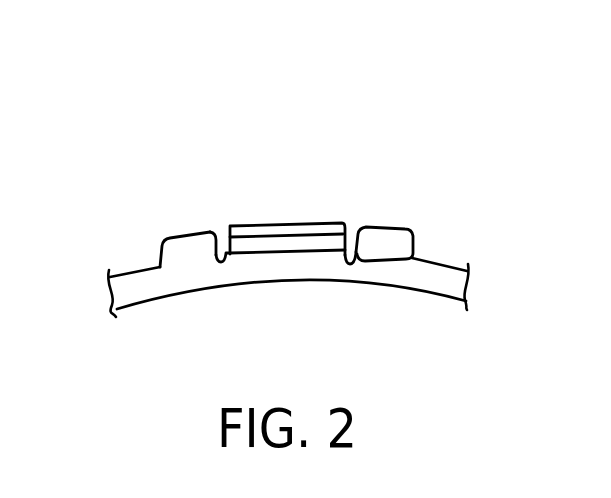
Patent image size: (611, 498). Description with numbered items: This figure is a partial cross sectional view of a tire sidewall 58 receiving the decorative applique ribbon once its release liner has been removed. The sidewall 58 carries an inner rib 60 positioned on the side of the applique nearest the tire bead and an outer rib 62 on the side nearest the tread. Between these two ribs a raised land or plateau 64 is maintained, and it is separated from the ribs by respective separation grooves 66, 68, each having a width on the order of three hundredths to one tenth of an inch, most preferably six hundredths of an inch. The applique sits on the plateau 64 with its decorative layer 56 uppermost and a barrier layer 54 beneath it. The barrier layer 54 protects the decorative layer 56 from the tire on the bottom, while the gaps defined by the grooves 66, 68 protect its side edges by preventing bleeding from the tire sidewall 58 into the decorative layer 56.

The tire sidewall 58 is at (200, 196).
The outer rib 62 is at (180, 247).
The decorative layer 56 is at (297, 226).
The barrier layer 54 is at (320, 243).
The inner rib 60 is at (395, 243).
The separation groove 66 is at (414, 260).
The raised land or plateau 64 is at (303, 264).
The separation groove 68 is at (222, 253).